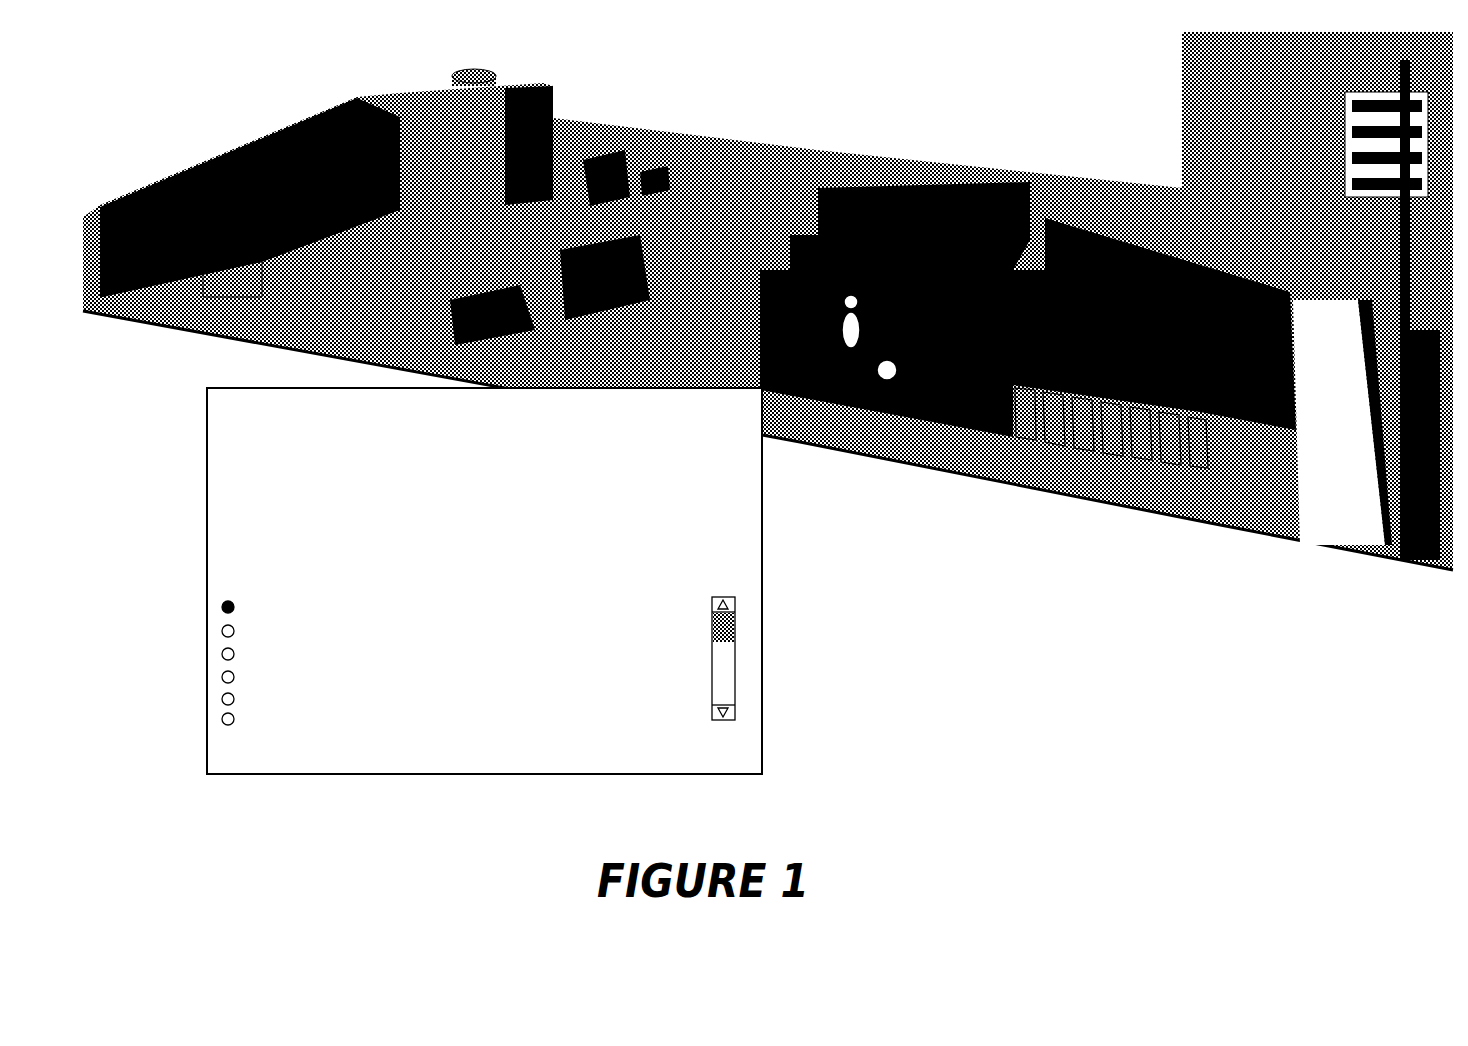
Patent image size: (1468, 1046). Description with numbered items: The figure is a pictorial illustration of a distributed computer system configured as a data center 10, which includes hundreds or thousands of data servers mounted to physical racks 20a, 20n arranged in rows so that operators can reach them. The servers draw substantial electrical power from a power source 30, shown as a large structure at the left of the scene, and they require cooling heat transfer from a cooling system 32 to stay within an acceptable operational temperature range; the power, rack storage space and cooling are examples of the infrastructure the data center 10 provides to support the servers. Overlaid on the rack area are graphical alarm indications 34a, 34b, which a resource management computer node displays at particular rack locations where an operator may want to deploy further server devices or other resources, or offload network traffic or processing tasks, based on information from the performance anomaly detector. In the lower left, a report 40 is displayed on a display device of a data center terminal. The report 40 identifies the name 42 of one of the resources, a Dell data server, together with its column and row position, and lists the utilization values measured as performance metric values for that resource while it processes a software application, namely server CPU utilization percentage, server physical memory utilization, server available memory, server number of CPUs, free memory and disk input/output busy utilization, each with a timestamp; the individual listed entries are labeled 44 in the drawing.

The data center 10 is at (744, 76).
The power source 30 is at (259, 175).
The cooling system 32 is at (630, 144).
The physical rack 20a is at (895, 277).
The physical rack 20n is at (1154, 386).
The graphical alarm indication 34a is at (827, 413).
The graphical alarm indication 34b is at (922, 446).
The report 40 is at (446, 581).
The name 42 is at (325, 530).
The alarm list entries 44 is at (416, 654).